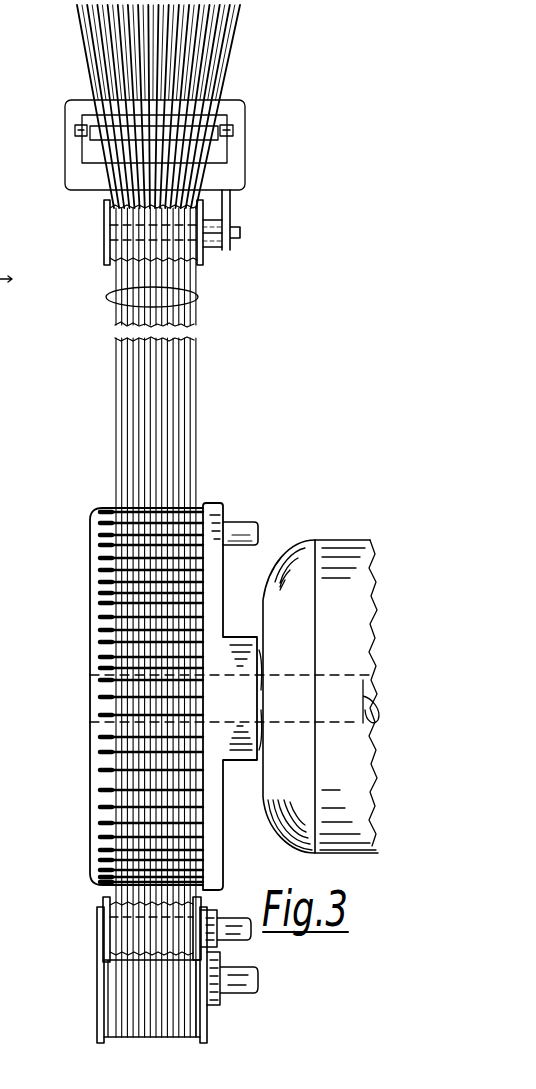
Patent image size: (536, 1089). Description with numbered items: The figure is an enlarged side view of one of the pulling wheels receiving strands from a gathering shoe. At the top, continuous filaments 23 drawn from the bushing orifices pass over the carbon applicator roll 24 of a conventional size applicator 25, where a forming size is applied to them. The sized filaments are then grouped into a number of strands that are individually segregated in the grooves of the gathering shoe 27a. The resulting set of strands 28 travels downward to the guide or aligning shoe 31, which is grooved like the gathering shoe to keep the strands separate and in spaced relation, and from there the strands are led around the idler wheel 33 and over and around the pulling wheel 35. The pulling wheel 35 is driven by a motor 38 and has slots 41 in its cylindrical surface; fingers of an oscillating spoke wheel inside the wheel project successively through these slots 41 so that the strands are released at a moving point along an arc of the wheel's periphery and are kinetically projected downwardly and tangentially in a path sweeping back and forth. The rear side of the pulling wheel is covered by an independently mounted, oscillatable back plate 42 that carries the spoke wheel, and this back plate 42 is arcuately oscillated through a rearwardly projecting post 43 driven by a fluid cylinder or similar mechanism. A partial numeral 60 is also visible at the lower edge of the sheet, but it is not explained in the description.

The continuous filaments 23 is at (110, 57).
The carbon applicator roll 24 is at (92, 142).
The size applicator 25 is at (72, 103).
The gathering shoe 27a is at (105, 212).
The set of strands 28 is at (197, 297).
The guide or aligning shoe 31 is at (108, 895).
The idler wheel 33 is at (118, 1035).
The pulling wheel 35 is at (92, 520).
The motor 38 is at (357, 510).
The slot 41 is at (108, 600).
The back plate 42 is at (228, 475).
The post 43 is at (243, 522).
The element 60 is at (236, 1075).